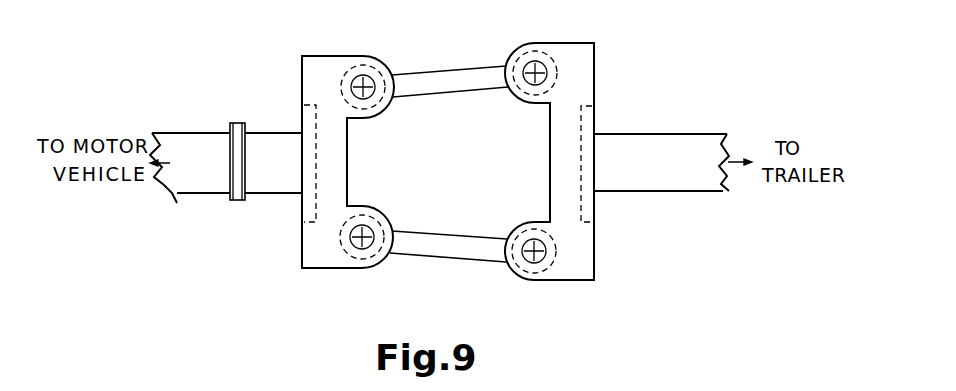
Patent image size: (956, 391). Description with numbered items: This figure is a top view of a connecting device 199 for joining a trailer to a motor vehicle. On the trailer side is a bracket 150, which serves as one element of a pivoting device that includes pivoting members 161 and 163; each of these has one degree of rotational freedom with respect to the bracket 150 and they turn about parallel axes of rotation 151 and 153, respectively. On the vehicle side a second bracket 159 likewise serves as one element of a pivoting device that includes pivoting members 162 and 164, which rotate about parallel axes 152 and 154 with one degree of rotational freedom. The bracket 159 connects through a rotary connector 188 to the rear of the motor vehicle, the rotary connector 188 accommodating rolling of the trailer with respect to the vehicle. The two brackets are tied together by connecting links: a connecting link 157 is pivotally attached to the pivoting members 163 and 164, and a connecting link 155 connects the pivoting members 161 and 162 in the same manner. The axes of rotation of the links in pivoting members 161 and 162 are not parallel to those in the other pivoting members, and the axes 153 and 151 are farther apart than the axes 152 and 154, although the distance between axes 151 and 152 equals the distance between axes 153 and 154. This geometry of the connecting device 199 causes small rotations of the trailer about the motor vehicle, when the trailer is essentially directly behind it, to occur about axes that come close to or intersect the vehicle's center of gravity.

The bracket 150 is at (580, 78).
The axis of rotation 151 is at (537, 71).
The axis of rotation 152 is at (365, 85).
The axis of rotation 153 is at (535, 255).
The axis of rotation 154 is at (361, 242).
The connecting link 155 is at (425, 83).
The connecting link 157 is at (460, 242).
The bracket 159 is at (315, 67).
The pivoting member 161 is at (518, 60).
The pivoting member 162 is at (363, 62).
The pivoting member 163 is at (523, 278).
The pivoting member 164 is at (368, 258).
The rotary connector 188 is at (238, 122).
The connecting device 199 is at (632, 261).